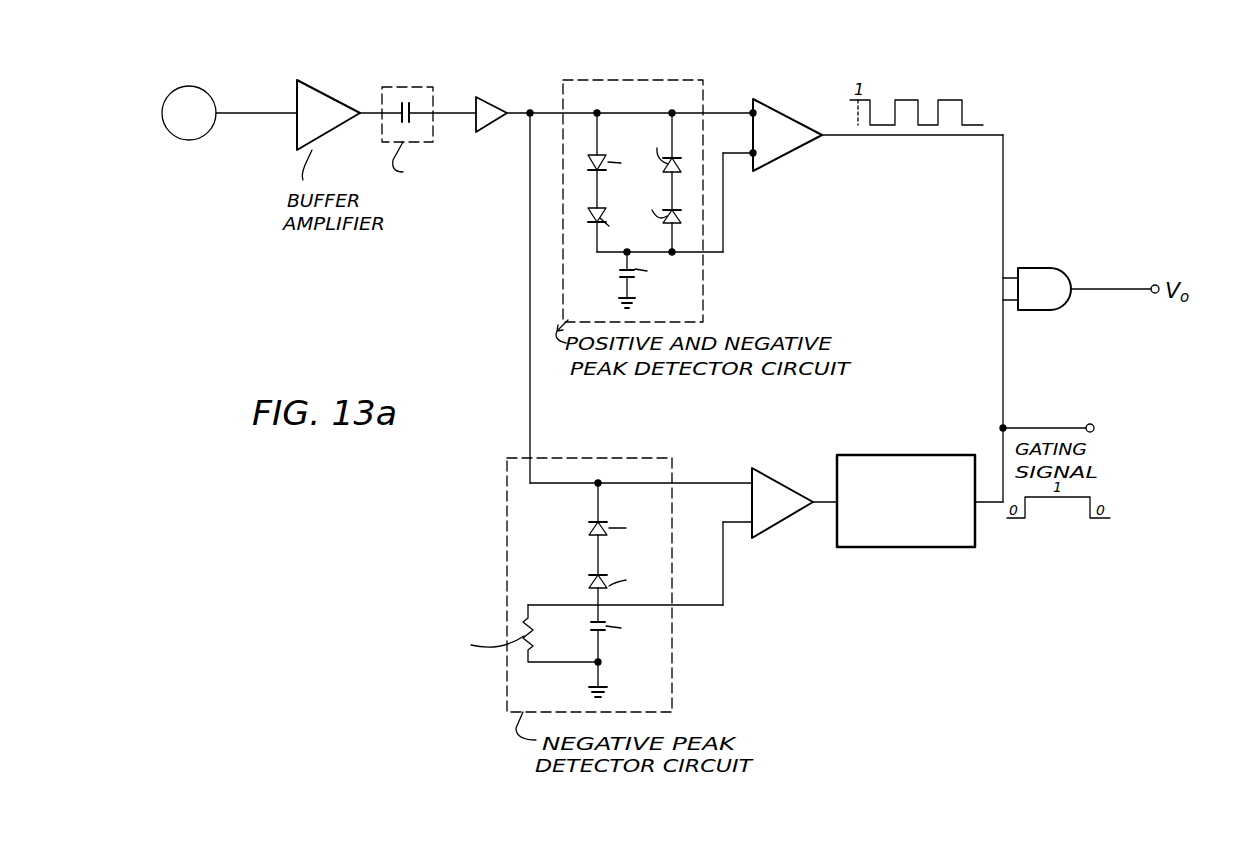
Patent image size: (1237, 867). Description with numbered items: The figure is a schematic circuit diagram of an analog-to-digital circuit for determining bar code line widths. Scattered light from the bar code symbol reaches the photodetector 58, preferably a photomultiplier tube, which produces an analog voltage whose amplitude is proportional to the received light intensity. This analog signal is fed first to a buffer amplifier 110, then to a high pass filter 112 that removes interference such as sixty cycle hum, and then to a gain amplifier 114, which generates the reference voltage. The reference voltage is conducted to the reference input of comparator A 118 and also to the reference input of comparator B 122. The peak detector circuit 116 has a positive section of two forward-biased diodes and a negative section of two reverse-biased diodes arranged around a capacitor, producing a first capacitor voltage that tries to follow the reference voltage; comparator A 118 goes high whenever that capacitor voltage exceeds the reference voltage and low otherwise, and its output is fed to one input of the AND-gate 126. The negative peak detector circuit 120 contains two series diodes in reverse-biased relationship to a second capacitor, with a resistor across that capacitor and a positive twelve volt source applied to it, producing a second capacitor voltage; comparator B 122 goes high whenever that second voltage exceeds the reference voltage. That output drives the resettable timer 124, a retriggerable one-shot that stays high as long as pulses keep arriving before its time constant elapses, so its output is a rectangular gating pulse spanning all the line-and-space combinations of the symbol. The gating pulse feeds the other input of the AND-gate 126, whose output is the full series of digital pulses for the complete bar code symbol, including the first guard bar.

The photodetector 58 is at (207, 63).
The buffer amplifier 110 is at (328, 95).
The high pass filter 112 is at (421, 86).
The gain amplifier 114 is at (491, 100).
The peak detector circuit 116 is at (648, 63).
The comparator (A) 118 is at (779, 110).
The negative peak detector circuit 120 is at (623, 436).
The comparator (B) 122 is at (803, 465).
The resettable timer 124 is at (934, 462).
The AND-gate 126 is at (1061, 257).